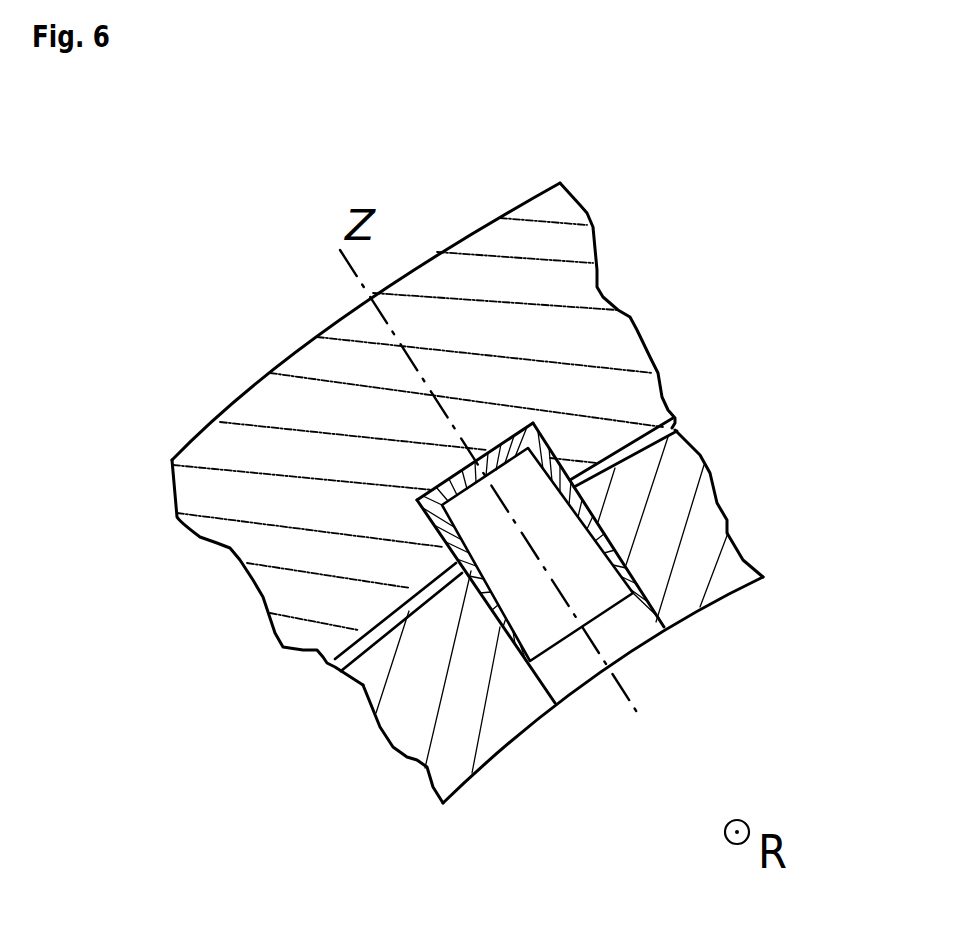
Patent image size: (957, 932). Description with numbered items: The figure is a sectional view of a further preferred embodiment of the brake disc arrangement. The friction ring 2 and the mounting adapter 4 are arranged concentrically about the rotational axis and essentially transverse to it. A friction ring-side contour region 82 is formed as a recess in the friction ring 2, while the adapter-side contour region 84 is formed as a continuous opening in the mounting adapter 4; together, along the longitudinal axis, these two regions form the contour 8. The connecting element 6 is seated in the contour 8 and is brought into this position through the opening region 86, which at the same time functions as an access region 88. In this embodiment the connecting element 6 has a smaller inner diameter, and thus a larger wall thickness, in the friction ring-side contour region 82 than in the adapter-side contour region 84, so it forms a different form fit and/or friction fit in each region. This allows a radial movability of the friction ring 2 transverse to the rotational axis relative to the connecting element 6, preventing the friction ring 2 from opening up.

The friction ring 2 is at (618, 333).
The mounting adapter 4 is at (710, 522).
The connecting element 6 is at (537, 637).
The contour 8 is at (448, 604).
The friction ring-side contour region 82 is at (427, 517).
The adapter-side contour region 84 is at (498, 627).
The opening region 86 is at (758, 689).
The access region 88 is at (655, 667).